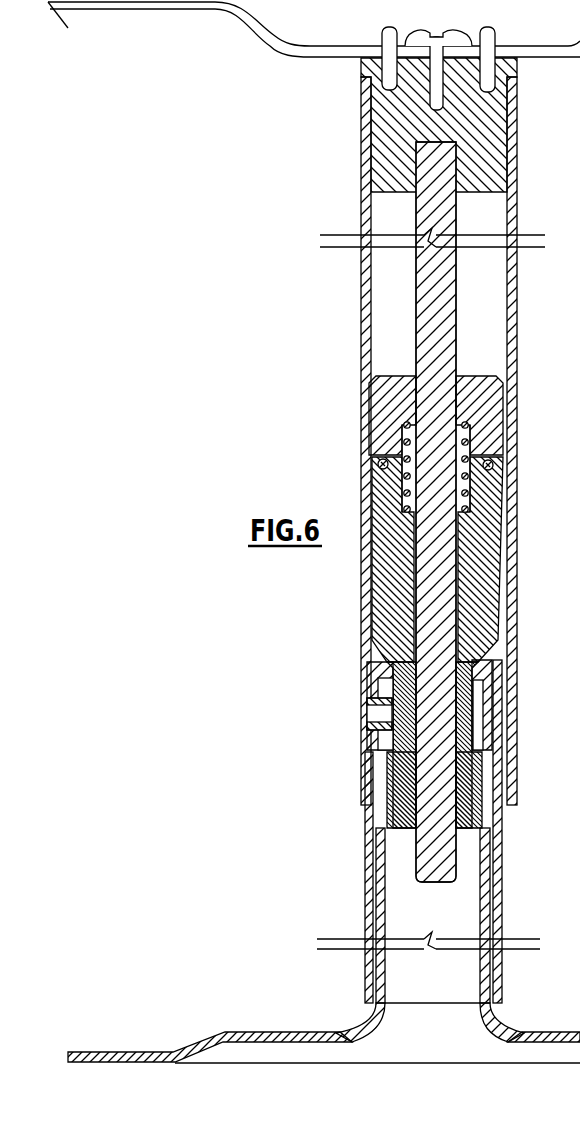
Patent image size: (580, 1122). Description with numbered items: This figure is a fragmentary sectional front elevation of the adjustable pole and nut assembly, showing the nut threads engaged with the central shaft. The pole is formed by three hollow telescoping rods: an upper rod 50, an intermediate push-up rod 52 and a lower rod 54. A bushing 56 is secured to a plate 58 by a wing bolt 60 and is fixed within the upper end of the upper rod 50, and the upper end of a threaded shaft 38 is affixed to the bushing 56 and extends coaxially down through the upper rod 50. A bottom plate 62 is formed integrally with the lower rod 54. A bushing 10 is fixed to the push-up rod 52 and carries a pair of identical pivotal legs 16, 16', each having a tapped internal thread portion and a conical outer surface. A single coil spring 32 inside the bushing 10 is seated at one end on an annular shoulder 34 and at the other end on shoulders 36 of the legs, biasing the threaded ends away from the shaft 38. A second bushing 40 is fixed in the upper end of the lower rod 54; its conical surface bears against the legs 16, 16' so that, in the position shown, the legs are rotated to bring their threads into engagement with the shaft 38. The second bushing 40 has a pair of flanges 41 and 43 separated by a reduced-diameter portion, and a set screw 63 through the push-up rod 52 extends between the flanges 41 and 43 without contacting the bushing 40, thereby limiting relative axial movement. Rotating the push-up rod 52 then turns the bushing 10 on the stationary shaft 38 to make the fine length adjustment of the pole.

The bushing 10 is at (392, 376).
The leg 16 is at (506, 559).
The leg 16' is at (351, 559).
The coil spring 32 is at (476, 468).
The annular shoulder 34 is at (472, 403).
The shoulder 36 is at (470, 522).
The shaft 38 is at (457, 215).
The second bushing 40 is at (482, 812).
The flange 41 is at (386, 670).
The flange 43 is at (384, 762).
The upper rod 50 is at (362, 428).
The push-up rod 52 is at (363, 873).
The lower rod 54 is at (385, 970).
The bushing 56 is at (500, 119).
The plate 58 is at (248, 25).
The wing bolt 60 is at (467, 37).
The bottom plate 62 is at (133, 1052).
The set screw 63 is at (373, 722).